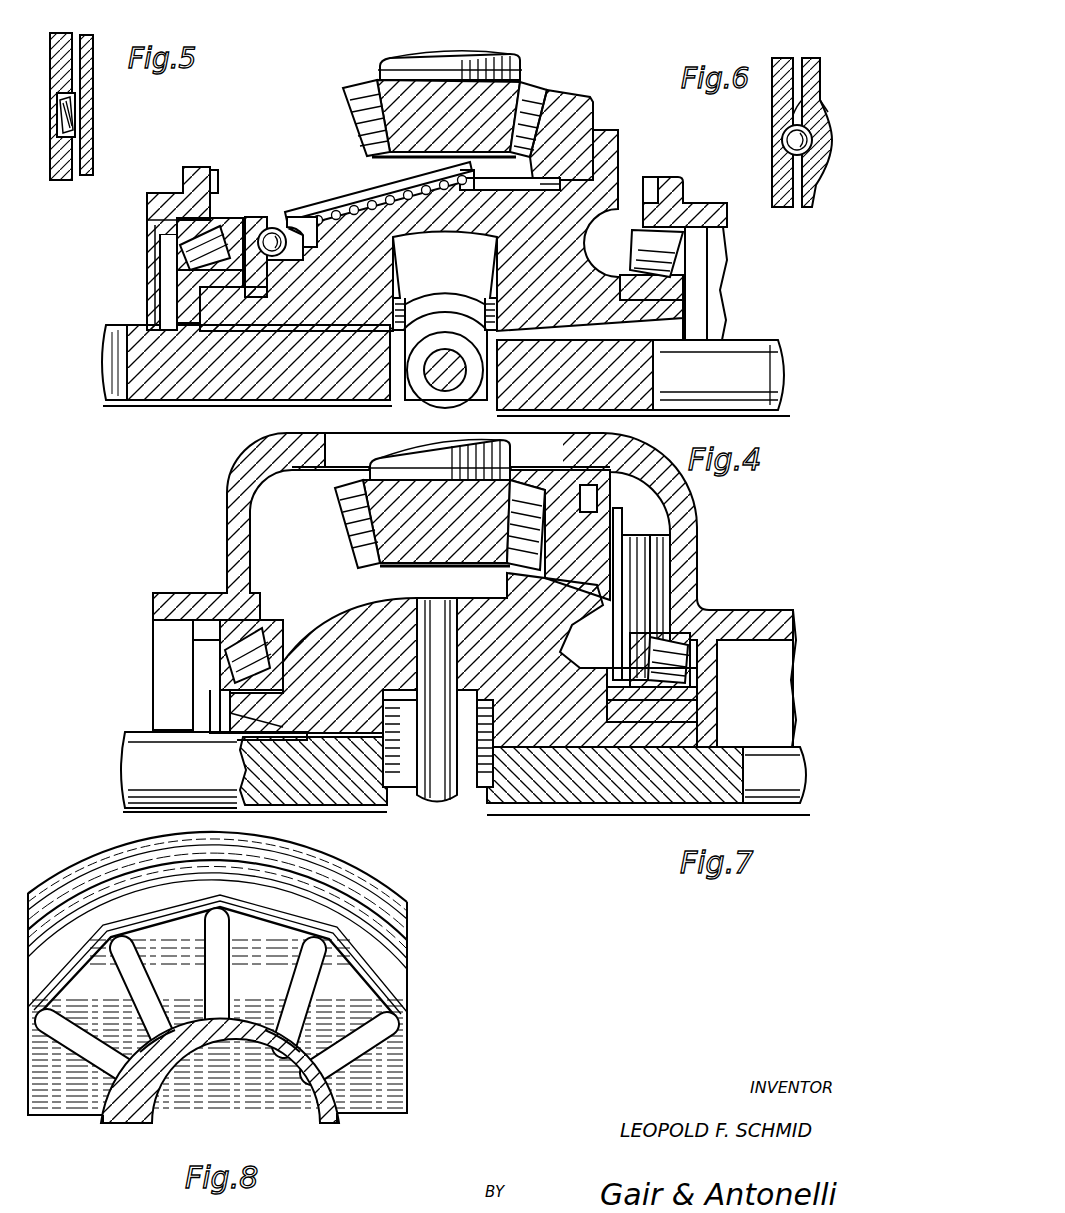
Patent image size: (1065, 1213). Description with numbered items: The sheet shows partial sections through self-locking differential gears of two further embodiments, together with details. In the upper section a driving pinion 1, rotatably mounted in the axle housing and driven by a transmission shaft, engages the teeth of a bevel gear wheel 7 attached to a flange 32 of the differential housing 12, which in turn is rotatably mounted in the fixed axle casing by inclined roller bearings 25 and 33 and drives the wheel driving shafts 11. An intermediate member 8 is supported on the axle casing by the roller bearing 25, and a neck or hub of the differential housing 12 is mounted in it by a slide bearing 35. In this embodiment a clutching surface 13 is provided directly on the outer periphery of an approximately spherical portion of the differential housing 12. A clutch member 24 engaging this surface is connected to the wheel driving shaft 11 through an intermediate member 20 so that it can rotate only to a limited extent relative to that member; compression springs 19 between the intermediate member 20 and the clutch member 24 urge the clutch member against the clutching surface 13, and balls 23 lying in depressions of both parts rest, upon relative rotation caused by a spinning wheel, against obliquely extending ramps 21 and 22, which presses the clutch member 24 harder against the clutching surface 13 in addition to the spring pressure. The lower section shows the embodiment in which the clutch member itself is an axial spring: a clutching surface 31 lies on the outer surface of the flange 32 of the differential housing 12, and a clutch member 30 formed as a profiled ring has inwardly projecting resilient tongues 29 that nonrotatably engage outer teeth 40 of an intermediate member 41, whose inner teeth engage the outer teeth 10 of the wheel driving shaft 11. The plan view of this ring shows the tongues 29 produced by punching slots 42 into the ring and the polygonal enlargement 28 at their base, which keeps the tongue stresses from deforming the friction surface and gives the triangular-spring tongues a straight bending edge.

In FIG. 4, the driving pinion 1 is at (398, 114).
In FIG. 7, the driving pinion 1 is at (380, 512).
In FIG. 7, the bevel gear wheel 7 is at (552, 520).
In FIG. 7, the intermediate member 8 is at (617, 700).
In FIG. 8, the intermediate member 8 is at (221, 1056).
In FIG. 7, the outer teeth 10 is at (699, 735).
In FIG. 4, the wheel driving shaft 11 is at (208, 380).
In FIG. 7, the wheel driving shaft 11 is at (775, 800).
In FIG. 4, the differential housing 12 is at (662, 310).
In FIG. 7, the differential housing 12 is at (393, 627).
In FIG. 4, the clutching surface 13 is at (380, 208).
In FIG. 5, the compression springs 19 is at (80, 118).
In FIG. 4, the intermediate member 20 is at (264, 217).
In FIG. 5, the intermediate member 20 is at (88, 78).
In FIG. 6, the intermediate member 20 is at (785, 172).
In FIG. 6, the ramp 21 is at (793, 115).
In FIG. 6, the ramp 22 is at (815, 125).
In FIG. 4, the balls 23 is at (276, 228).
In FIG. 6, the balls 23 is at (788, 140).
In FIG. 4, the clutch member 24 is at (333, 213).
In FIG. 5, the clutch member 24 is at (90, 140).
In FIG. 6, the clutch member 24 is at (816, 170).
In FIG. 4, the inclined roller bearing 25 is at (190, 258).
In FIG. 7, the enlargement 28 is at (675, 525).
In FIG. 8, the enlargement 28 is at (383, 964).
In FIG. 7, the tongues 29 is at (640, 600).
In FIG. 8, the tongues 29 is at (183, 1042).
In FIG. 7, the clutch member 30 is at (618, 515).
In FIG. 8, the clutch member 30 is at (358, 897).
In FIG. 7, the clutching surface 31 is at (599, 488).
In FIG. 7, the flange 32 is at (652, 560).
In FIG. 4, the inclined roller bearing 33 is at (645, 262).
In FIG. 4, the slide bearing 35 is at (205, 300).
In FIG. 7, the outer teeth 40 is at (682, 690).
In FIG. 8, the outer teeth 40 is at (156, 1107).
In FIG. 7, the intermediate member 41 is at (688, 716).
In FIG. 8, the intermediate member 41 is at (288, 1093).
In FIG. 8, the slots 42 is at (305, 975).